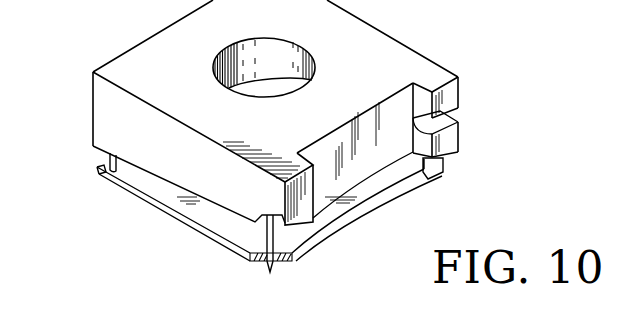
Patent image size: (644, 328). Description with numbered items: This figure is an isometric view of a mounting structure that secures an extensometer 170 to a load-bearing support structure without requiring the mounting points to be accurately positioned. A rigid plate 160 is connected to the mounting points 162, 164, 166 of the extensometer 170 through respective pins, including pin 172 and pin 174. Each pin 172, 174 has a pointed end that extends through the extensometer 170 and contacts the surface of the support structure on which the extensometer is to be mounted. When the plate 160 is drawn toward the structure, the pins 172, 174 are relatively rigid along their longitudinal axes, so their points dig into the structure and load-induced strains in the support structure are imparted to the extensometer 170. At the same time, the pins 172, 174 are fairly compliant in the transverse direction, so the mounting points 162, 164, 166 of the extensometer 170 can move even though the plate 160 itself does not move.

The rigid plate 160 is at (160, 42).
The mounting point 162 is at (267, 265).
The mounting point 164 is at (100, 171).
The mounting point 166 is at (423, 167).
The extensometer 170 is at (177, 214).
The pin 172 is at (277, 240).
The pin 174 is at (107, 158).